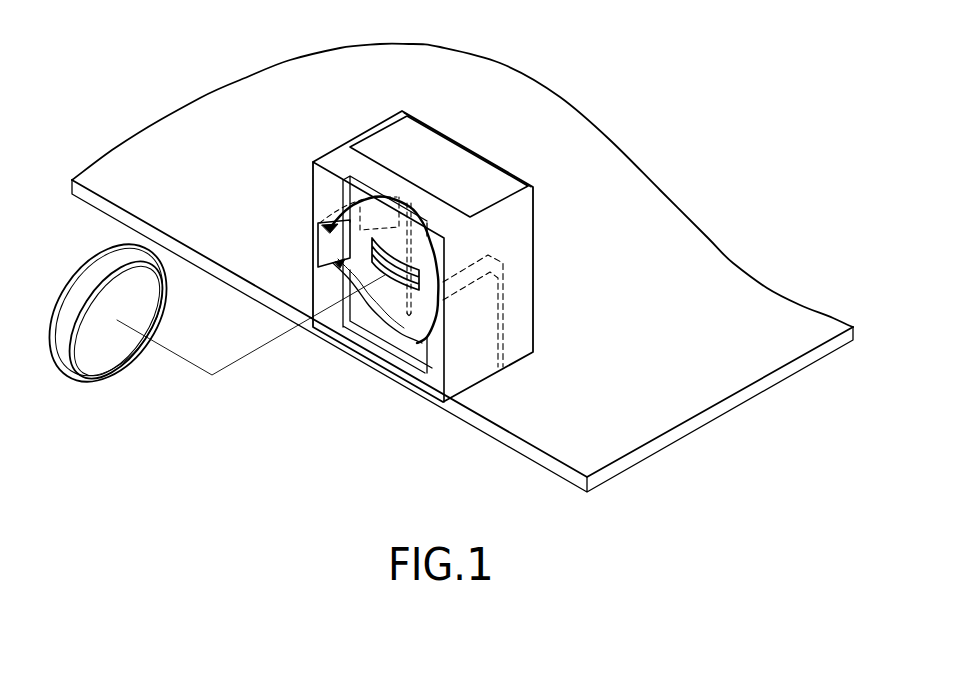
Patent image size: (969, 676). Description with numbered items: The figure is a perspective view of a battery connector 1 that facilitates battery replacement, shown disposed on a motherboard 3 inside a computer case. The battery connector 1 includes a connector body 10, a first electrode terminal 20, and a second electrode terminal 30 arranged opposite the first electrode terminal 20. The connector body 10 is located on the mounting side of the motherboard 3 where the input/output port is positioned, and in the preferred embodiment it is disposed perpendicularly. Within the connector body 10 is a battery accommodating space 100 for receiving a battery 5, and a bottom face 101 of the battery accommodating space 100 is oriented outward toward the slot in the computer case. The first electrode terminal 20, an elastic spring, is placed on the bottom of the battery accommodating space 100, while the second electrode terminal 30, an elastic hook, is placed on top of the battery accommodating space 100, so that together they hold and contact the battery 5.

The battery connector 1 is at (363, 128).
The motherboard 3 is at (698, 422).
The battery 5 is at (108, 250).
The connector body 10 is at (518, 268).
The first electrode terminal 20 is at (385, 274).
The second electrode terminal 30 is at (318, 253).
The battery accommodating space 100 is at (384, 335).
The bottom face 101 is at (418, 318).